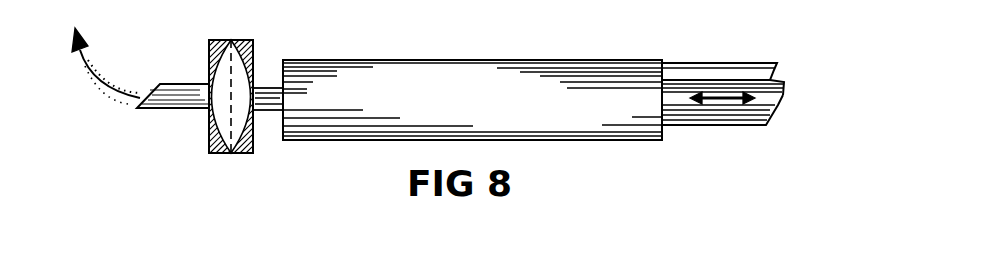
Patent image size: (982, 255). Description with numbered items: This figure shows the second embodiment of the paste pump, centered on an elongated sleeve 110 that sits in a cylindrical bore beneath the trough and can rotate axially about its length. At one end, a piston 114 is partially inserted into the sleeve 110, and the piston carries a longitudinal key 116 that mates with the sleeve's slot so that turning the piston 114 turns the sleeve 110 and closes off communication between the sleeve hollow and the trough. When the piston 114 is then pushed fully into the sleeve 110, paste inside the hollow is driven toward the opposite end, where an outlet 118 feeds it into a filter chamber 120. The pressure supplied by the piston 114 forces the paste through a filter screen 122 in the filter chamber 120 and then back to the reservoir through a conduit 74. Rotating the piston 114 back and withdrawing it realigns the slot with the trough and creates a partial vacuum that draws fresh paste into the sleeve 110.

The conduit 74 is at (183, 84).
The sleeve 110 is at (560, 60).
The piston 114 is at (700, 126).
The longitudinal key 116 is at (700, 63).
The outlet 118 is at (266, 109).
The filter chamber 120 is at (240, 80).
The filter screen 122 is at (227, 109).